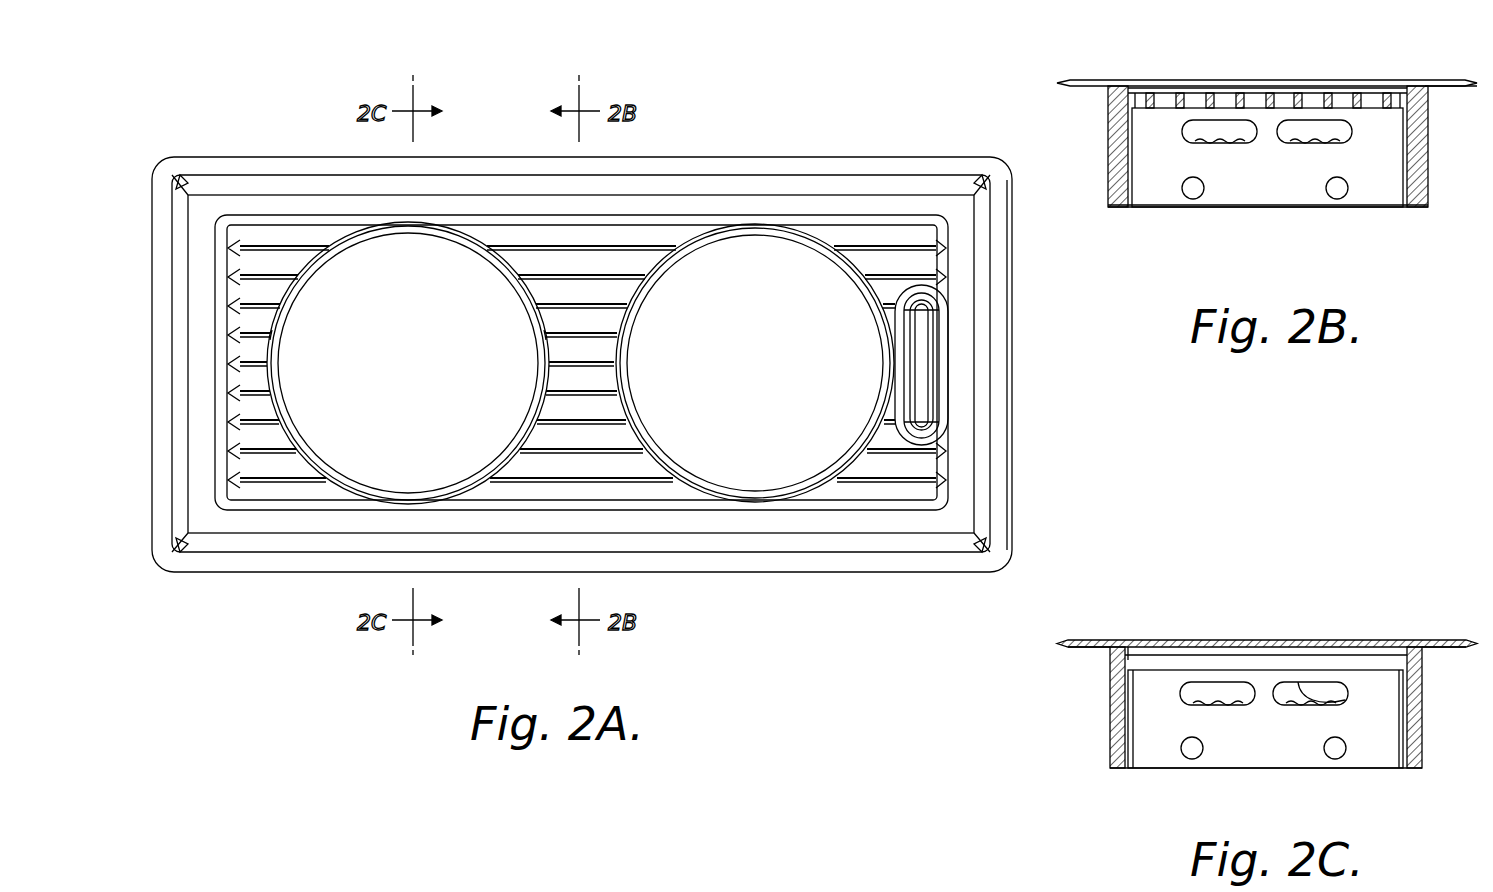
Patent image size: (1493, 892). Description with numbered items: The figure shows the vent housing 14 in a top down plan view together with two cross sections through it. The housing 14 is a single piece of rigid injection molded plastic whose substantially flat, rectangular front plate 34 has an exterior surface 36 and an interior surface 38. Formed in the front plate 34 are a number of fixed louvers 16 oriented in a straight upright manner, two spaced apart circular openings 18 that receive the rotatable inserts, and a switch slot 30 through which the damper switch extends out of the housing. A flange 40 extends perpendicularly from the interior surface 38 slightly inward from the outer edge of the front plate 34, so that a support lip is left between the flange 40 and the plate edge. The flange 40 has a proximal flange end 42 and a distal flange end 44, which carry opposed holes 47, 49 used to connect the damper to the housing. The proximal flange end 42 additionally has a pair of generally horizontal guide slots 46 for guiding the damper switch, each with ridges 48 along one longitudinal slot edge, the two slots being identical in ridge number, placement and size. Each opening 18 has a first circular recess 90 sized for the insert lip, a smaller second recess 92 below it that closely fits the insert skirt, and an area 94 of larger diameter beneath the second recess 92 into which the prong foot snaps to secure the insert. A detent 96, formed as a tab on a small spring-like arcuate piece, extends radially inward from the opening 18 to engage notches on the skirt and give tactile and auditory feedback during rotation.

In FIG. 2A, the housing 14 is at (802, 157).
In FIG. 2A, the fixed louvers 16 is at (550, 480).
In FIG. 2B, the fixed louvers 16 is at (1183, 84).
In FIG. 2A, the openings 18 is at (283, 403).
In FIG. 2C, the openings 18 is at (1128, 660).
In FIG. 2A, the switch slot 30 is at (940, 345).
In FIG. 2A, the front plate 34 is at (1000, 428).
In FIG. 2B, the front plate 34 is at (1100, 82).
In FIG. 2C, the front plate 34 is at (1098, 642).
In FIG. 2A, the exterior surface 36 is at (200, 200).
In FIG. 2C, the exterior surface 36 is at (1447, 642).
In FIG. 2B, the interior surface 38 is at (1448, 88).
In FIG. 2C, the interior surface 38 is at (1088, 648).
In FIG. 2B, the flange 40 is at (1110, 134).
In FIG. 2C, the flange 40 is at (1422, 750).
In FIG. 2C, the proximal flange end 42 is at (1368, 755).
In FIG. 2B, the distal flange end 44 is at (1375, 193).
In FIG. 2C, the guide slots 46 is at (1188, 700).
In FIG. 2C, the hole 47 is at (1188, 760).
In FIG. 2C, the ridges 48 is at (1222, 700).
In FIG. 2B, the hole 49 is at (1198, 195).
In FIG. 2C, the first circular recess 90 is at (1410, 700).
In FIG. 2C, the second recess 92 is at (1405, 688).
In FIG. 2C, the area below second recess 94 is at (1400, 690).
In FIG. 2A, the detent 96 is at (280, 347).